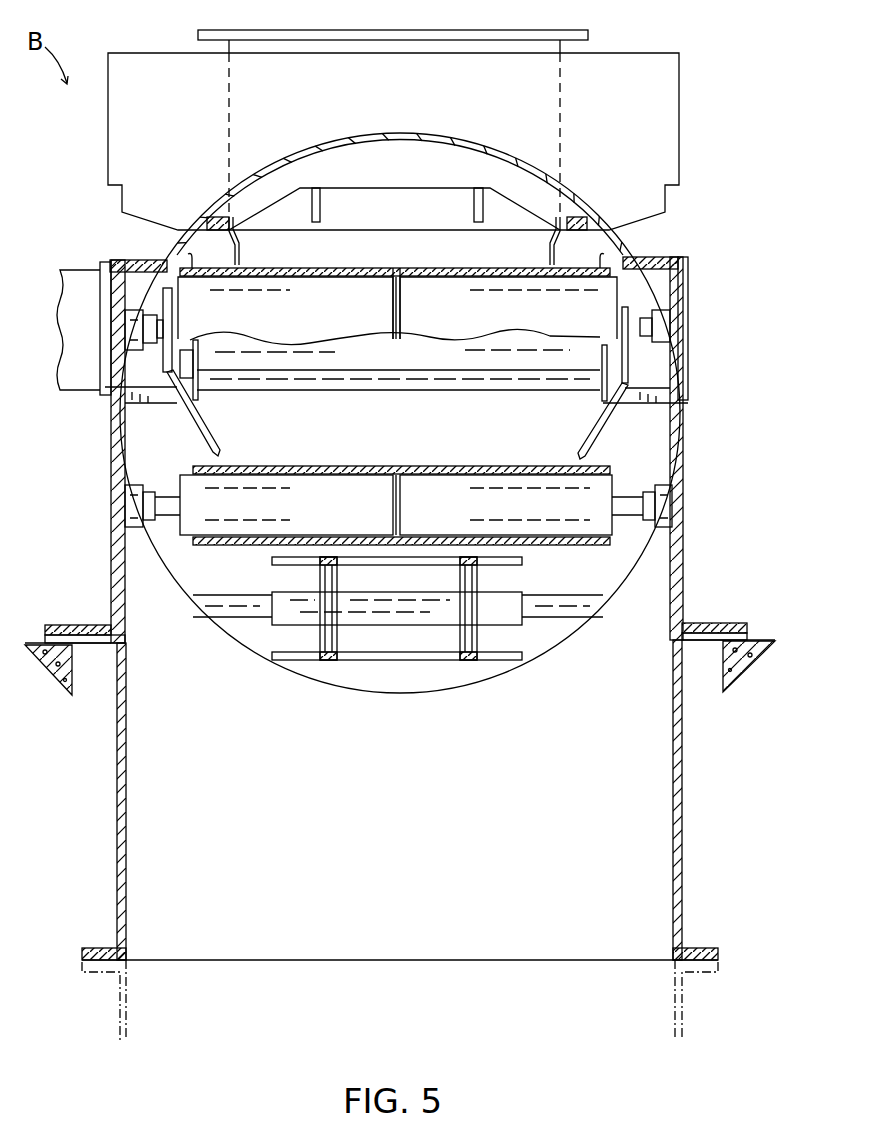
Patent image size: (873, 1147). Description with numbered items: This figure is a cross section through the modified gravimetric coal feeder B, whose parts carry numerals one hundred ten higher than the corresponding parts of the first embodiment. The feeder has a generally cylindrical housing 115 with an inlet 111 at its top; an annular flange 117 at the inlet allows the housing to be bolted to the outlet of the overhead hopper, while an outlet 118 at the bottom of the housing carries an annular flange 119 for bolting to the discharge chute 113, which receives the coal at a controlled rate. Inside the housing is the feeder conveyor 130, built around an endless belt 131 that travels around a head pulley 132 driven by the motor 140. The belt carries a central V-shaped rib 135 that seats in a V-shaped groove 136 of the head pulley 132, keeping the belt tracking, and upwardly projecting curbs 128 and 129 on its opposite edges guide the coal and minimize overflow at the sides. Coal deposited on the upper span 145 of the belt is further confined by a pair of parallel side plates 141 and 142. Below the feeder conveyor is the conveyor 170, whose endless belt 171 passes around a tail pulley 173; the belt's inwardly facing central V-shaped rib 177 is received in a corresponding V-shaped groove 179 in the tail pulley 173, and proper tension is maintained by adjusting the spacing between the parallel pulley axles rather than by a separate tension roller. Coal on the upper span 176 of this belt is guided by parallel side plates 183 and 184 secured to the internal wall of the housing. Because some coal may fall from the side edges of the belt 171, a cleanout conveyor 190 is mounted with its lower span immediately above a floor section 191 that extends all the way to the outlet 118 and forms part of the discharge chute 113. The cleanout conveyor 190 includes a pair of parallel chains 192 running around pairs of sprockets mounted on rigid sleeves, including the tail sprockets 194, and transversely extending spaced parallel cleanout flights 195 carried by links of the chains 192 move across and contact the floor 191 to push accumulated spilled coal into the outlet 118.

The inlet 111 is at (536, 46).
The discharge chute 113 is at (682, 1008).
The housing 115 is at (504, 152).
The annular flange 117 is at (592, 34).
The outlet 118 is at (681, 775).
The annular flange 119 is at (700, 948).
The curb 128 is at (188, 262).
The curb 129 is at (604, 262).
The feeder conveyor 130 is at (397, 310).
The endless belt 131 is at (405, 372).
The head pulley 132 is at (604, 294).
The central V-shaped rib 135 is at (408, 274).
The V-shaped groove 136 is at (394, 316).
The motor 140 is at (80, 383).
The side plate 141 is at (239, 248).
The side plate 142 is at (557, 257).
The upper span 145 is at (467, 270).
The conveyor 170 is at (398, 517).
The endless belt 171 is at (568, 545).
The tail pulley 173 is at (604, 476).
The upper span 176 is at (472, 466).
The central V-shaped rib 177 is at (404, 477).
The V-shaped groove 179 is at (394, 512).
The side plate 183 is at (212, 433).
The side plate 184 is at (590, 435).
The cleanout conveyor 190 is at (389, 647).
The floor section 191 is at (500, 660).
The chains 192 is at (345, 661).
The tail sprockets 194 is at (467, 585).
The cleanout flights 195 is at (512, 565).